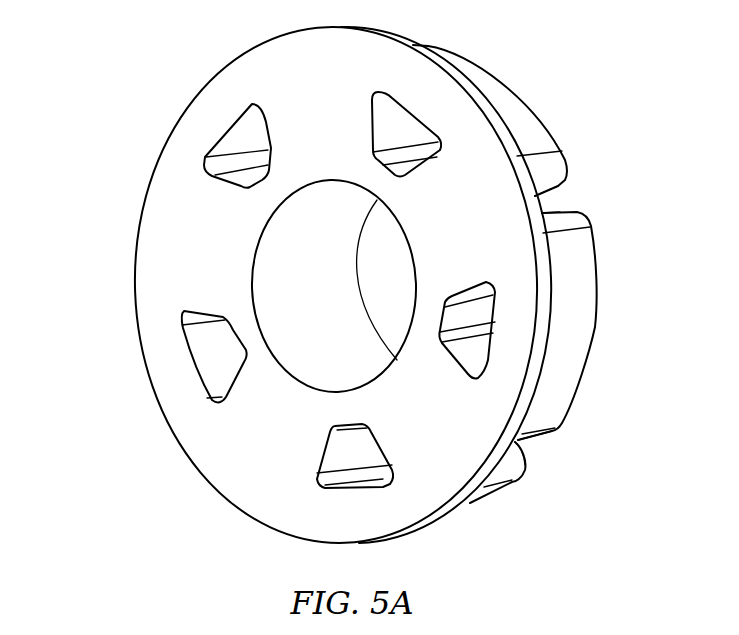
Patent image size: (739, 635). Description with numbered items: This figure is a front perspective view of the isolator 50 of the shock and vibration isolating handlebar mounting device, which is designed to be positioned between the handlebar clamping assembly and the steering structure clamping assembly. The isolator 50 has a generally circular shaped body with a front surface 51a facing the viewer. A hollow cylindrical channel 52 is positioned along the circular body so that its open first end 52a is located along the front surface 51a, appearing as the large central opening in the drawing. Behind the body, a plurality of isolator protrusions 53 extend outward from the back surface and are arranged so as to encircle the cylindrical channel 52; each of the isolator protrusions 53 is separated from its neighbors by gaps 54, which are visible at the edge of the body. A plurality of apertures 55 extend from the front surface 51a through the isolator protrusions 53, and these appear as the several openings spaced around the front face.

The isolator 50 is at (110, 87).
The front surface 51a is at (247, 477).
The hollow cylindrical channel 52 is at (374, 262).
The open first end 52a is at (303, 383).
The isolator protrusions 53 is at (520, 107).
The gaps 54 is at (552, 202).
The apertures 55 is at (245, 128).